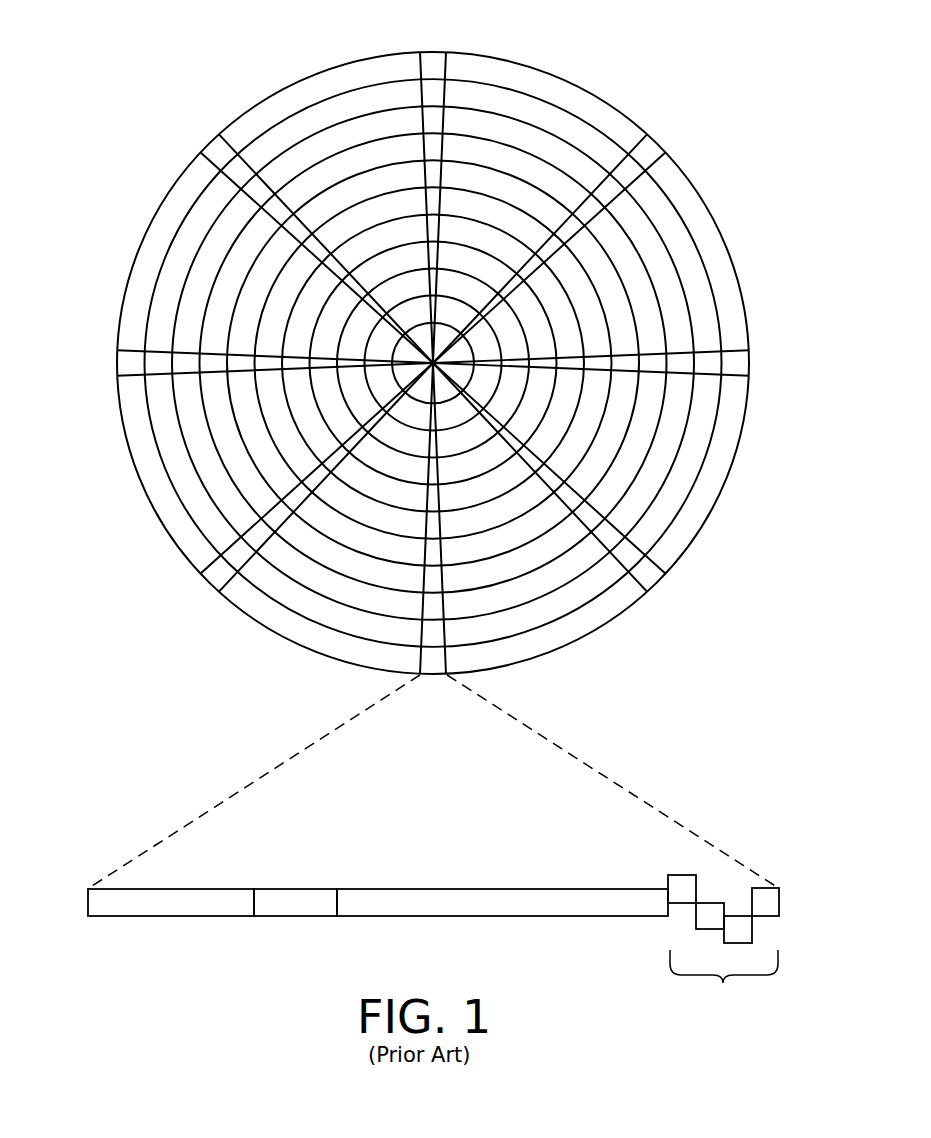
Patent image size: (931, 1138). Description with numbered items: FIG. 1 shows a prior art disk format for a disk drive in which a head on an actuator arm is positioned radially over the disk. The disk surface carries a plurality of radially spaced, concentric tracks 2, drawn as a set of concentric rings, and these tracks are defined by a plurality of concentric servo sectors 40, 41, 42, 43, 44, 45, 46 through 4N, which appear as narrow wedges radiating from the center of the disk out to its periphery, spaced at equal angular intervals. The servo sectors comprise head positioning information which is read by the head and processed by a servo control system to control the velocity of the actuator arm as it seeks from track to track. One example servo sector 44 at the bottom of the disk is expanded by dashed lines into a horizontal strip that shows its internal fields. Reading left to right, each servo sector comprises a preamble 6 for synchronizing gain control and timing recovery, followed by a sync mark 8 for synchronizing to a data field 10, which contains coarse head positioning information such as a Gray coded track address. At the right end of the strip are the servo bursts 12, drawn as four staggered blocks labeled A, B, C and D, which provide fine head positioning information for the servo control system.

The tracks 2 is at (562, 97).
The servo sector 40 is at (436, 62).
The servo sector 41 is at (650, 150).
The servo sector 42 is at (743, 365).
The servo sector 43 is at (650, 575).
The servo sector 44 is at (293, 742).
The servo sector 45 is at (215, 580).
The servo sector 46 is at (122, 363).
The servo sector 4N is at (218, 152).
The preamble 6 is at (151, 911).
The sync mark 8 is at (293, 911).
The data field 10 is at (485, 911).
The servo bursts 12 is at (652, 855).